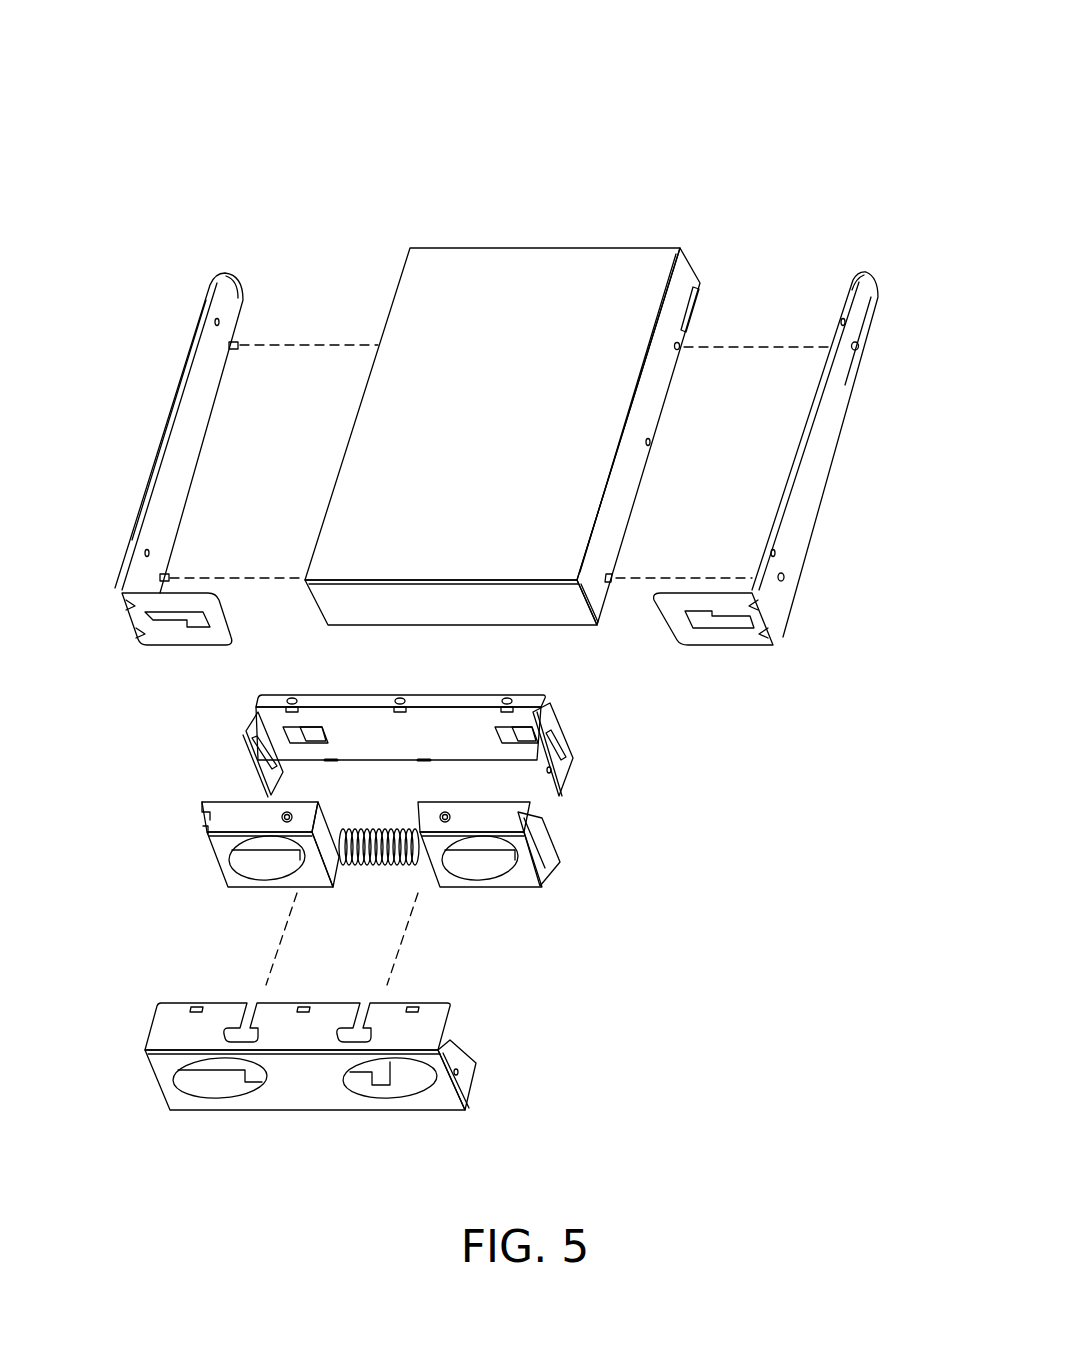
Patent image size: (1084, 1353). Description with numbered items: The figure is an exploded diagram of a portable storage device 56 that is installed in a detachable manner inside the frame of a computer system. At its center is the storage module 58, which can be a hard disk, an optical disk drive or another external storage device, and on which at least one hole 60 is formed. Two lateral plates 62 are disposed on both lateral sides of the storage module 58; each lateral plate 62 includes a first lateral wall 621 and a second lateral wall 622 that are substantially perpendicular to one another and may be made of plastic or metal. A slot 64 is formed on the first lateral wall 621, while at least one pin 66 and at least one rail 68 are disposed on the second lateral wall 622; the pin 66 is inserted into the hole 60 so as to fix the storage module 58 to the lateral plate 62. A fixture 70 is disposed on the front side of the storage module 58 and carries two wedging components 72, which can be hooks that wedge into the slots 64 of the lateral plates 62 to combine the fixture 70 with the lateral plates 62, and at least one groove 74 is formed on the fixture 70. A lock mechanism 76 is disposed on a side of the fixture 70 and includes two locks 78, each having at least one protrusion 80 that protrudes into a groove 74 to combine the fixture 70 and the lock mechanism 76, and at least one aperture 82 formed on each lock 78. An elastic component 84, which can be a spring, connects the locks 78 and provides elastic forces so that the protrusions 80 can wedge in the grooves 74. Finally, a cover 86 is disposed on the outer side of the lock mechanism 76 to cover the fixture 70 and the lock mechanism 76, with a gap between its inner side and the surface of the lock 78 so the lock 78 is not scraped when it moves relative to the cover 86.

The portable storage device 56 is at (735, 105).
The storage module 58 is at (563, 256).
The hole 60 is at (613, 576).
The lateral plate 62 is at (186, 700).
The first lateral wall 621 is at (167, 640).
The second lateral wall 622 is at (142, 585).
The slot 64 is at (196, 622).
The pin 66 is at (236, 343).
The rail 68 is at (190, 368).
The fixture 70 is at (383, 688).
The wedging component 72 is at (301, 728).
The groove 74 is at (249, 697).
The lock mechanism 76 is at (642, 893).
The lock 78 is at (318, 885).
The protrusion 80 is at (205, 806).
The aperture 82 is at (263, 866).
The elastic component 84 is at (372, 832).
The cover 86 is at (476, 1041).